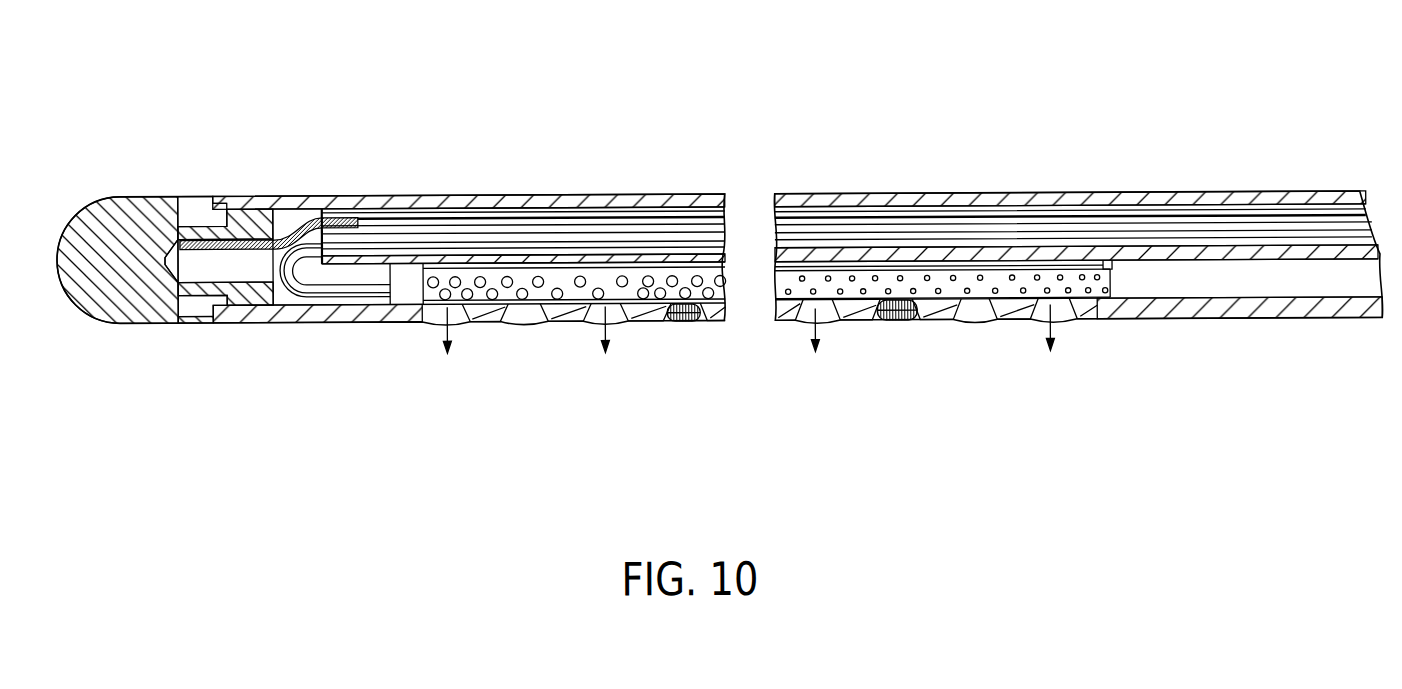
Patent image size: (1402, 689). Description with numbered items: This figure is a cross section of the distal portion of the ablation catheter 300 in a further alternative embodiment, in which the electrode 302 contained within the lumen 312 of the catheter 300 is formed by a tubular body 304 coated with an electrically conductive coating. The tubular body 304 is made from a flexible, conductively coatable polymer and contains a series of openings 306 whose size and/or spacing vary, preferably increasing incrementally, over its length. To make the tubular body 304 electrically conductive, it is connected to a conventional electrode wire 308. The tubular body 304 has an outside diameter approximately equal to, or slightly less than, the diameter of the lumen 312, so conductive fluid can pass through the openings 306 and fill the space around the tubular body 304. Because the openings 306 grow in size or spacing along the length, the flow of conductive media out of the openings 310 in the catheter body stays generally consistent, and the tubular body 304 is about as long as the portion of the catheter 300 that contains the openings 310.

The ablation catheter 300 is at (893, 129).
The electrode 302 is at (1086, 303).
The tubular body 304 is at (996, 282).
The openings 306 is at (905, 300).
The electrode wire 308 is at (355, 285).
The openings in the catheter body 310 is at (973, 311).
The lumen 312 is at (541, 269).